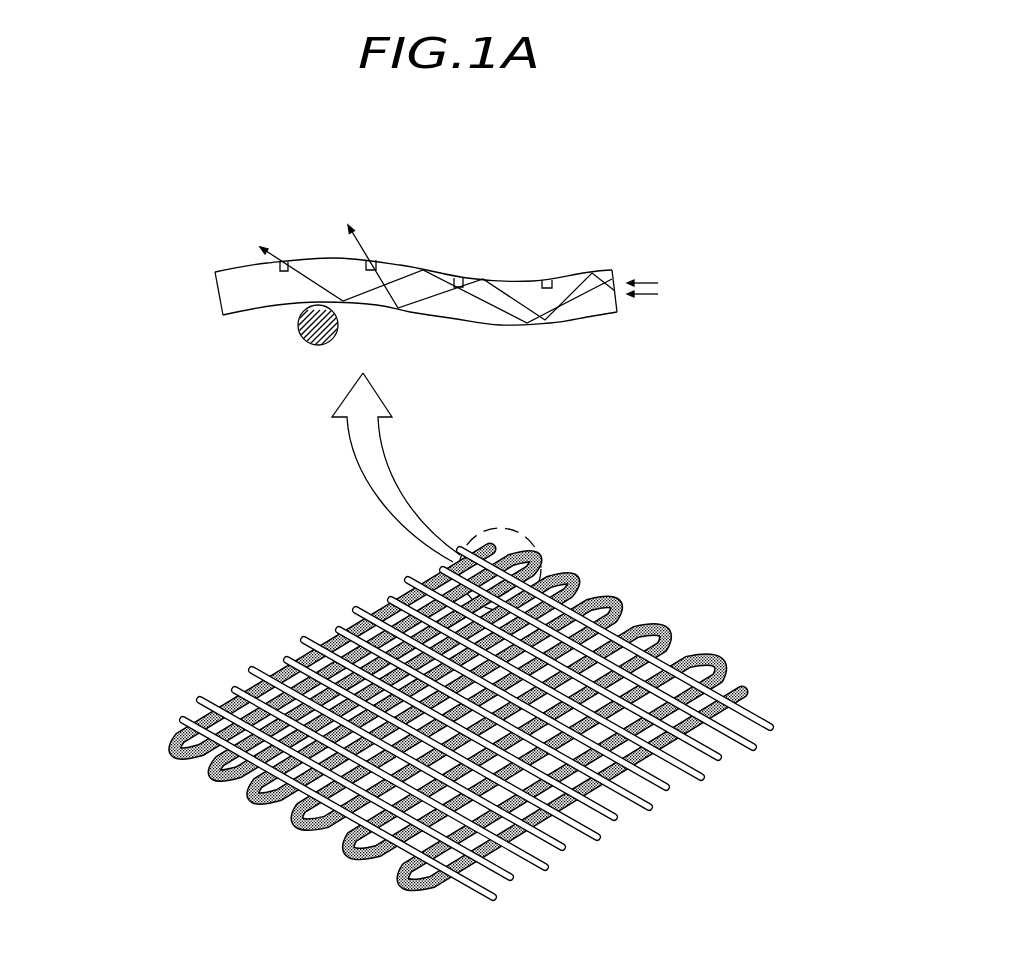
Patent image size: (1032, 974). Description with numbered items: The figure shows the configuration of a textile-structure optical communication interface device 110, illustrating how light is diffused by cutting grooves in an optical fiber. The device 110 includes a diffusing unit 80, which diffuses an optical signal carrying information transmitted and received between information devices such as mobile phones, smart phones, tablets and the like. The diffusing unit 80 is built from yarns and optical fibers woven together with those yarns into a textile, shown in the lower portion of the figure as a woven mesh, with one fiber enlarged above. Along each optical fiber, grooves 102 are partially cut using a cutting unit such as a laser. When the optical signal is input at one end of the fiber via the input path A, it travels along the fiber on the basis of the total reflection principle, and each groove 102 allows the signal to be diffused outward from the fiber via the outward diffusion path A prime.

The diffusing unit 80 is at (422, 177).
The groove 102 is at (374, 260).
The textile-structure optical communication interface device 110 is at (649, 578).